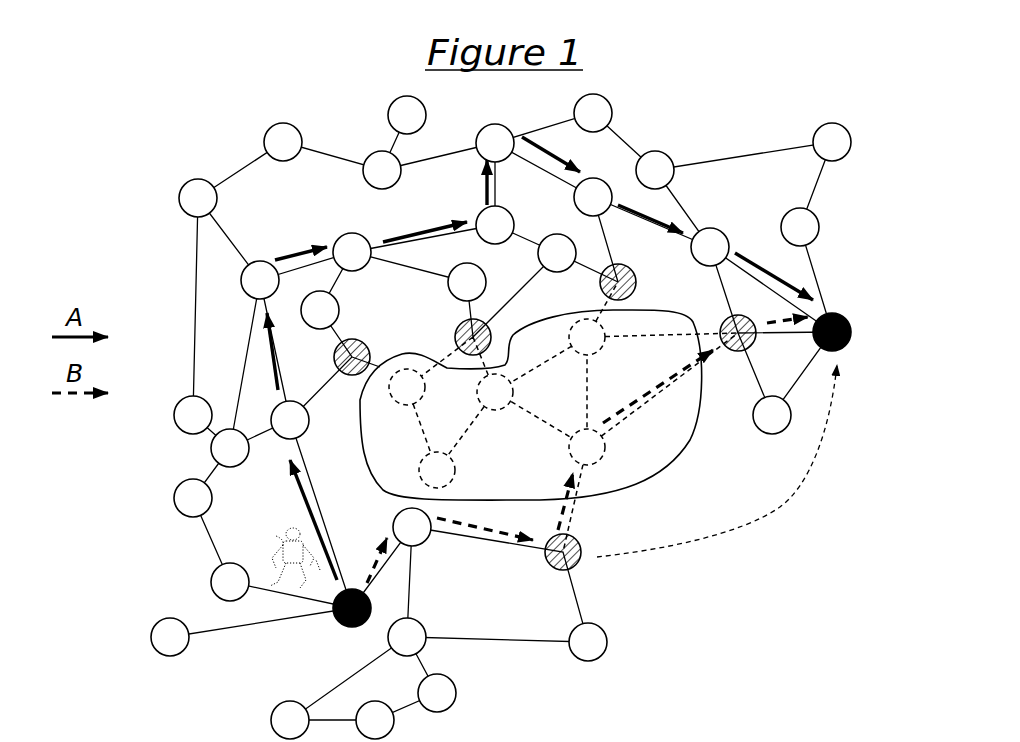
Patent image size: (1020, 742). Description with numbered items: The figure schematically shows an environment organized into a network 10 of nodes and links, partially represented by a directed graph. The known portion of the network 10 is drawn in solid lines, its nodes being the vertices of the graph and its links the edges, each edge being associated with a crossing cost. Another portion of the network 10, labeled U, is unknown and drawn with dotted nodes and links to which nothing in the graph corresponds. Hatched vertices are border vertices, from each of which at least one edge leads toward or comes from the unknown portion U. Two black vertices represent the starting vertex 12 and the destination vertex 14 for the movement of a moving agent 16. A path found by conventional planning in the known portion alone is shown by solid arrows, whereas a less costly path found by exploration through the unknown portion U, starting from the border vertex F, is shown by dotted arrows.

The network 10 is at (127, 228).
The starting vertex 12 is at (345, 628).
The destination vertex 14 is at (851, 336).
The moving agent 16 is at (277, 530).
The unknown portion U is at (688, 448).
The border vertex F is at (578, 566).